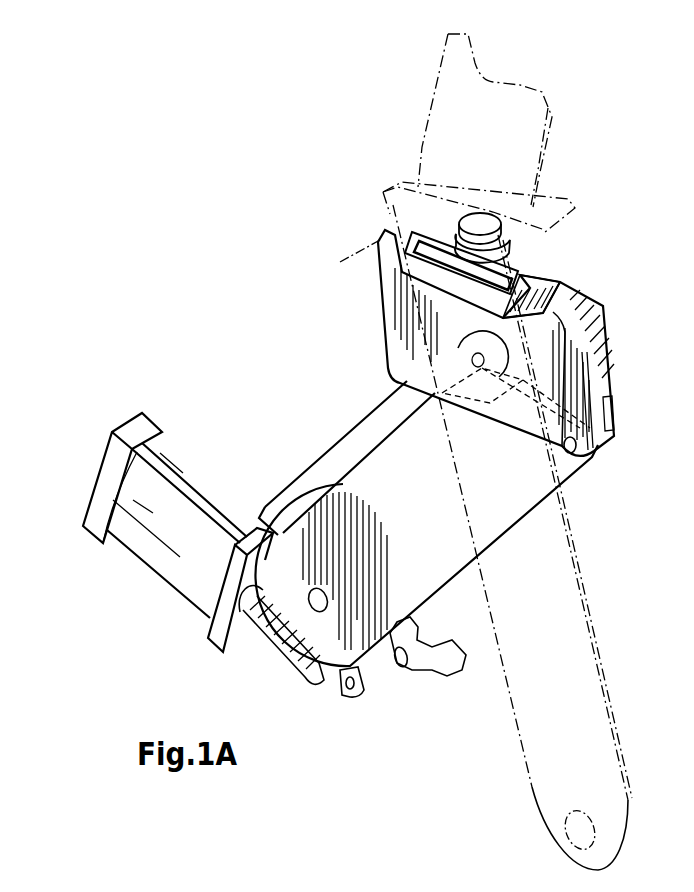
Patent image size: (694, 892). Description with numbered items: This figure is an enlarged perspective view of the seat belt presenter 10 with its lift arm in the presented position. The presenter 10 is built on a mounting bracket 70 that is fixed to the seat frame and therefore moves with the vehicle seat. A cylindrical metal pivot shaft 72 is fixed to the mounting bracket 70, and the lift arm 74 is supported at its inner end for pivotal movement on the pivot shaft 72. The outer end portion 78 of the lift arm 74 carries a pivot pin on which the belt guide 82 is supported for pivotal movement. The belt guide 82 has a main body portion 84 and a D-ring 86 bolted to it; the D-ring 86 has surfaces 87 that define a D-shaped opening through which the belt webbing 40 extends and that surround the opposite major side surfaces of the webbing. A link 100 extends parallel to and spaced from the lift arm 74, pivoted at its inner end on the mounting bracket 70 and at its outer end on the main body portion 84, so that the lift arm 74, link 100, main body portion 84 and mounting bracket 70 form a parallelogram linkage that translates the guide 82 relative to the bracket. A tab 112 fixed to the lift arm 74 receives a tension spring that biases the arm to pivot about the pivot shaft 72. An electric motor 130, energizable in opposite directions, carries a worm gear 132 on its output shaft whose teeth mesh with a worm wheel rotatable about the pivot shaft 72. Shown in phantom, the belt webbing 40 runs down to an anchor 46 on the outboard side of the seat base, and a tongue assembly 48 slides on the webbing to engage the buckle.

The seat belt presenter 10 is at (594, 169).
The belt webbing 40 is at (604, 673).
The anchor 46 is at (582, 831).
The tongue assembly 48 is at (352, 262).
The mounting bracket 70 is at (430, 658).
The pivot shaft 72 is at (322, 589).
The lift arm 74 is at (524, 516).
The outer end portion 78 is at (578, 470).
The belt guide 82 is at (630, 380).
The main body portion 84 is at (613, 323).
The D-ring 86 is at (557, 259).
The surfaces 87 is at (380, 256).
The link 100 is at (327, 454).
The tab 112 is at (360, 694).
The electric motor 130 is at (158, 588).
The worm gear 132 is at (268, 640).